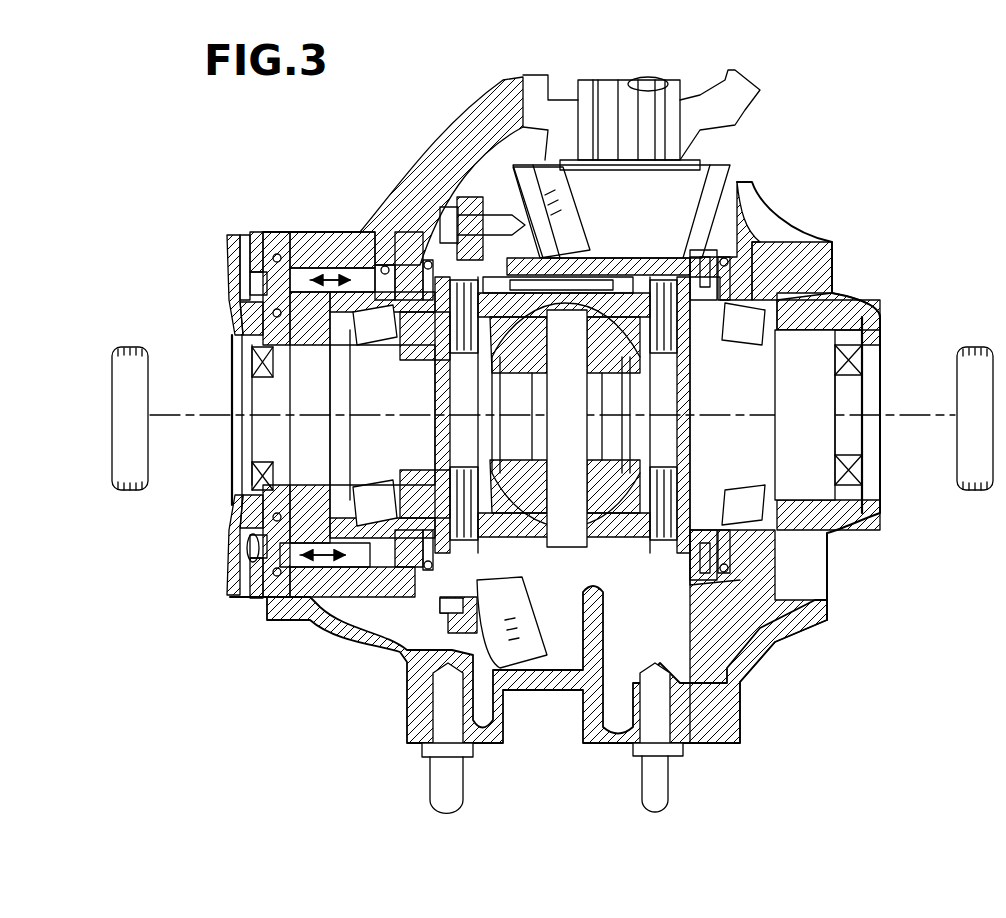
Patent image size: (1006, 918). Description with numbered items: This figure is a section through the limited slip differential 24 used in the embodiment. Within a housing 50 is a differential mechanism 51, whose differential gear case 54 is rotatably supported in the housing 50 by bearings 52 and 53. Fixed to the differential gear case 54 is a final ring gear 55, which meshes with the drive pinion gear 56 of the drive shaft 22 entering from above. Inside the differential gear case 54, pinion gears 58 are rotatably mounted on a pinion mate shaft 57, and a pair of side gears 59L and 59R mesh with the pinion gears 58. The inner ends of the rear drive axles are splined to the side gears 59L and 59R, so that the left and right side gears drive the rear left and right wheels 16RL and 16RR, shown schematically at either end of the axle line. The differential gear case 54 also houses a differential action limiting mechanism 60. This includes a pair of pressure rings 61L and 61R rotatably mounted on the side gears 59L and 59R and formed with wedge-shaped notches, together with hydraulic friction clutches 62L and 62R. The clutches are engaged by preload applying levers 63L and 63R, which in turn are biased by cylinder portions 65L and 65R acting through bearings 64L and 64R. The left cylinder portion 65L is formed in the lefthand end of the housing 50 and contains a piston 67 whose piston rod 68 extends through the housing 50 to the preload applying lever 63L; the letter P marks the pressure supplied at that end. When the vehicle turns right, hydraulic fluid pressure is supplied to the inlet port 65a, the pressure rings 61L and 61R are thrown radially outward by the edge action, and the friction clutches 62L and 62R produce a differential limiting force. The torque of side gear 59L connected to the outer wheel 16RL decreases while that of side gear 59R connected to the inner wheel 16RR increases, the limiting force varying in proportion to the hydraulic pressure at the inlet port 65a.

The rear left wheel 16RL is at (130, 492).
The rear right wheel 16RR is at (962, 492).
The drive shaft 22 is at (647, 80).
The limited slip differential 24 is at (838, 137).
The housing 50 is at (448, 147).
The differential mechanism 51 is at (760, 255).
The bearing 52 is at (367, 317).
The bearing 53 is at (780, 313).
The differential gear case 54 is at (710, 587).
The final ring gear 55 is at (497, 193).
The drive pinion gear 56 is at (720, 173).
The pinion mate shaft 57 is at (573, 555).
The pinion gear 58 is at (608, 558).
The side gear 59L is at (432, 590).
The side gear 59R is at (677, 553).
The differential action limiting mechanism 60 is at (420, 236).
The pressure ring 61L is at (560, 293).
The pressure ring 61R is at (635, 293).
The hydraulic friction clutch 62L is at (437, 257).
The hydraulic friction clutch 62R is at (727, 242).
The preload applying lever 63L is at (353, 330).
The preload applying lever 63R is at (760, 313).
The bearing 64L is at (397, 277).
The bearing 64R is at (767, 247).
The cylinder portion 65L is at (268, 263).
The cylinder portion 65R is at (790, 242).
The inlet port 65a is at (242, 262).
The piston 67 is at (243, 313).
The piston rod 68 is at (322, 268).
The pressure port P is at (248, 238).